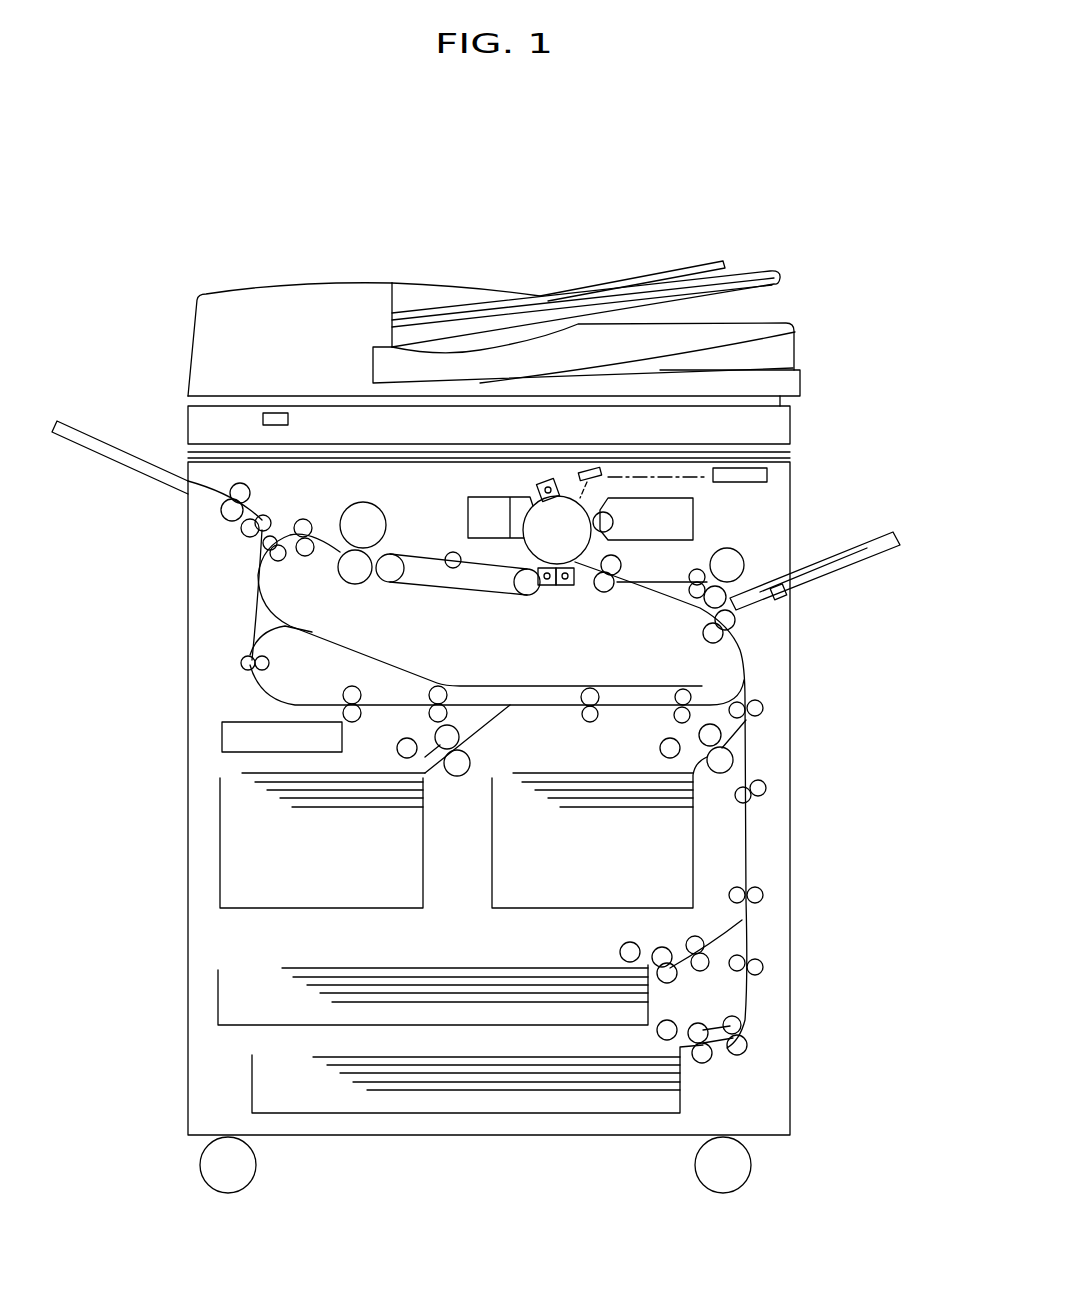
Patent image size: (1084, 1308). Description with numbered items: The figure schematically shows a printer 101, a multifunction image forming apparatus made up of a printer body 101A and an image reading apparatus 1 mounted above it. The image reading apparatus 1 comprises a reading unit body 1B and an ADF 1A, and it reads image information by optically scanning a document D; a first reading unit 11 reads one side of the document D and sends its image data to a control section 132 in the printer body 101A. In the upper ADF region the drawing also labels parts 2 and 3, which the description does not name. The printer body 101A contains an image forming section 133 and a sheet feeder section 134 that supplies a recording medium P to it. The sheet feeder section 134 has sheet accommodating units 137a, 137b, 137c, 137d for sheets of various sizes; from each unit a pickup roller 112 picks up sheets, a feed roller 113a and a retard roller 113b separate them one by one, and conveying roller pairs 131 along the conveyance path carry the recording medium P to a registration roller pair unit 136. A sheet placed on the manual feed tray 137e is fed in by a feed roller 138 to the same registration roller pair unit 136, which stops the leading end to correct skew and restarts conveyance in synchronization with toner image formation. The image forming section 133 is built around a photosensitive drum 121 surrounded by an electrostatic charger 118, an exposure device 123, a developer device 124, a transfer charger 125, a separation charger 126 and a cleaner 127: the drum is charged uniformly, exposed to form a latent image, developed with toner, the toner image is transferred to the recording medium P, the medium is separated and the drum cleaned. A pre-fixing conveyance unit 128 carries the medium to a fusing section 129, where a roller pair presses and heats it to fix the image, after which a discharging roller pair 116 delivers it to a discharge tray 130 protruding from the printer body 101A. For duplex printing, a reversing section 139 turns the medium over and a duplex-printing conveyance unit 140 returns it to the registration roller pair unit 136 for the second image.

The printer 101 is at (446, 198).
The printer body 101A is at (812, 487).
The image reading apparatus 1 is at (569, 357).
The ADF 1A is at (818, 343).
The reading unit body 1B is at (548, 423).
The document tray 2 is at (768, 265).
The document feeding unit 3 is at (770, 323).
The document D is at (683, 265).
The first reading unit 11 is at (288, 418).
The discharge tray 130 is at (80, 448).
The discharging roller pair 116 is at (227, 515).
The fusing section 129 is at (355, 513).
The reversing section 139 is at (358, 632).
The duplex-printing conveyance unit 140 is at (232, 686).
The pre-fixing conveyance unit 128 is at (455, 570).
The image forming section 133 is at (512, 560).
The photosensitive drum 121 is at (527, 503).
The cleaner 127 is at (468, 517).
The electrostatic charger 118 is at (546, 477).
The exposure device 123 is at (767, 475).
The developer device 124 is at (680, 522).
The transfer charger 125 is at (570, 587).
The separation charger 126 is at (550, 587).
The registration roller pair unit 136 is at (608, 588).
The feed roller 138 is at (732, 563).
The manual feed tray 137e is at (875, 568).
The conveying roller pair 131 is at (762, 707).
The sheet feeder section 134 is at (800, 823).
The control section 132 is at (222, 740).
The sheet accommodating unit 137a is at (252, 1087).
The sheet accommodating unit 137b is at (218, 998).
The sheet accommodating unit 137c is at (220, 850).
The sheet accommodating unit 137d is at (492, 880).
The pickup roller 112 is at (400, 748).
The feed roller 113a is at (443, 730).
The retard roller 113b is at (467, 773).
The recording medium P is at (532, 772).